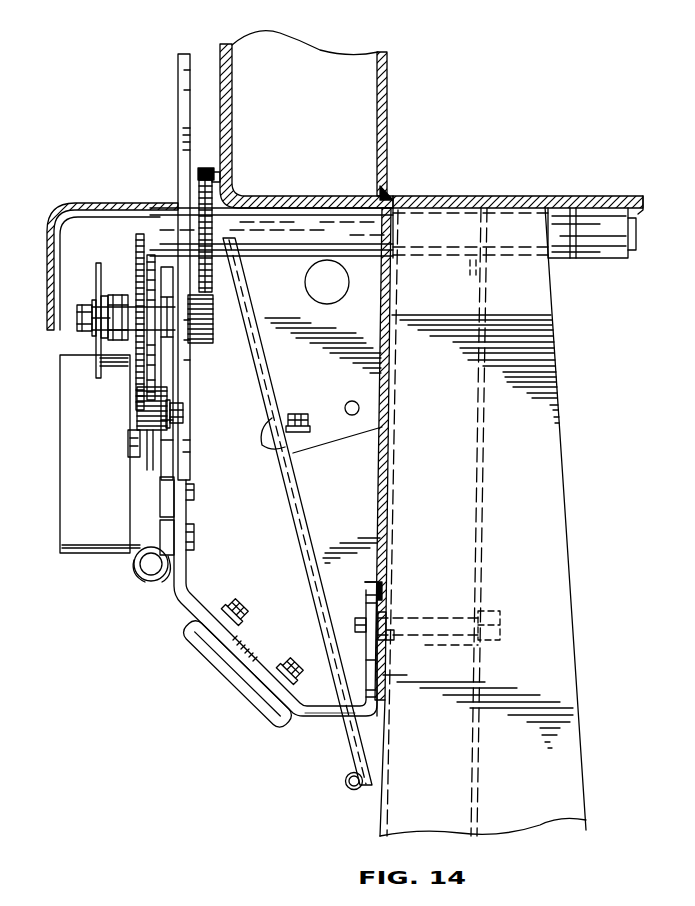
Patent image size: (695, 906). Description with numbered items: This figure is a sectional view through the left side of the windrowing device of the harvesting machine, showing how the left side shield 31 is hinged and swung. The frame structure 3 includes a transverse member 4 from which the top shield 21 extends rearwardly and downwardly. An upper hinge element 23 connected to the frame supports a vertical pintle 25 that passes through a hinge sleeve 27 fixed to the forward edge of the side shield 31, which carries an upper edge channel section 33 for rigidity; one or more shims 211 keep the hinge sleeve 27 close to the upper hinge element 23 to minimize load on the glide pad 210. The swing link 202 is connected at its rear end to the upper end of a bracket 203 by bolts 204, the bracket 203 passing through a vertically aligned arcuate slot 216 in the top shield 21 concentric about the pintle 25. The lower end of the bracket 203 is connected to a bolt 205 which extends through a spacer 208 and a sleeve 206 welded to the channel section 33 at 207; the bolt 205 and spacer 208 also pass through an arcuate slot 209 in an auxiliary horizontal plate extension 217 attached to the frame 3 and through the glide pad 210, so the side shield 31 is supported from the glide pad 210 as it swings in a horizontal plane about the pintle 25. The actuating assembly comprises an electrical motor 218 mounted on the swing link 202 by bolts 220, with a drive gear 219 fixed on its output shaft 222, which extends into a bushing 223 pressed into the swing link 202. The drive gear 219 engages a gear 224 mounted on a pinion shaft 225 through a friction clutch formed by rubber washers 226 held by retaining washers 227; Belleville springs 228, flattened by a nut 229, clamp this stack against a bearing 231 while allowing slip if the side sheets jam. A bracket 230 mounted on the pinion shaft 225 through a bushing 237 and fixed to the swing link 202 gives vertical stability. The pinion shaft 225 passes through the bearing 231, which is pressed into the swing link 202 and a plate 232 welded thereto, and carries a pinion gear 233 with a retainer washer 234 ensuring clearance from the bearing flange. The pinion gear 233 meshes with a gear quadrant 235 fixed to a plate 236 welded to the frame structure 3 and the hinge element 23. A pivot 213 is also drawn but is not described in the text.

The frame structure 3 is at (226, 92).
The transverse member 4 is at (387, 126).
The upper hinge element 23 is at (291, 224).
The hinge sleeve 27 is at (440, 216).
The shim 211 is at (572, 212).
The bearing 231 is at (598, 215).
The pintle 25 is at (634, 232).
The left side shield 31 is at (570, 643).
The auxiliary horizontal plate extension 217 is at (383, 478).
The top shield 21 is at (302, 532).
The arcuate slot 216 is at (347, 724).
The gear 224 is at (148, 258).
The rubber washers 226 is at (157, 258).
The gear quadrant 235 is at (198, 172).
The plate 236 is at (215, 176).
The retaining washers 227 is at (148, 295).
The Belleville springs 228 is at (118, 300).
The pinion shaft 225 is at (82, 325).
The bushing 237 is at (85, 307).
The bracket 230 is at (98, 289).
The nut 229 is at (119, 342).
The retainer washer 234 is at (176, 358).
The pinion gear 233 is at (206, 330).
The plate 232 is at (170, 390).
The output shaft 222 is at (184, 411).
The bushing 223 is at (183, 424).
The electrical motor 218 is at (65, 477).
The drive gear 219 is at (151, 474).
The bolts 220 is at (194, 523).
The pivot 213 is at (140, 585).
The swing link 202 is at (186, 606).
The bracket 203 is at (310, 718).
The bolts 204 is at (265, 690).
The bolt 205 is at (357, 625).
The glide pad 210 is at (372, 583).
The spacer 208 is at (386, 620).
The weld 207 is at (478, 614).
The arcuate slot 209 is at (386, 638).
The sleeve 206 is at (448, 640).
The channel section 33 is at (447, 795).